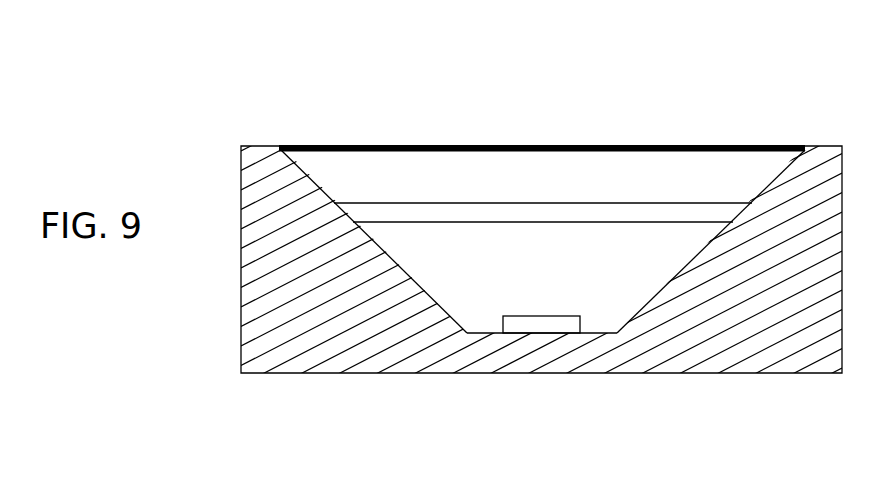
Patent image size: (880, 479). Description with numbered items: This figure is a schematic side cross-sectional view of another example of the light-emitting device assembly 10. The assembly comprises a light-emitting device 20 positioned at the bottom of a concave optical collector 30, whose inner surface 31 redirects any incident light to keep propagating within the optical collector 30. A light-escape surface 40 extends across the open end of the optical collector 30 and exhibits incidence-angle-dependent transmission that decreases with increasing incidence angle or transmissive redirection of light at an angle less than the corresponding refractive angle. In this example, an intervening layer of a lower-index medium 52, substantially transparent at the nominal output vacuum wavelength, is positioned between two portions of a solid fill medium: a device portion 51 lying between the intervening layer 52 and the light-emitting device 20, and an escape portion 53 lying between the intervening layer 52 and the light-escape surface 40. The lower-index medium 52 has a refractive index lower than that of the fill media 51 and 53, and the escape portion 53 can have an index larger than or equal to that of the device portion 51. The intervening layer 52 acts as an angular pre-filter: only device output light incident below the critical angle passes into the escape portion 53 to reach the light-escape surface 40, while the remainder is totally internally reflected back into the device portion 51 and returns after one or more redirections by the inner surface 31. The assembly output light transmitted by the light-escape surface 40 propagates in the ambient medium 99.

The light-emitting device assembly 10 is at (213, 122).
The light-emitting device 20 is at (533, 325).
The optical collector 30 is at (593, 178).
The inner surface 31 is at (390, 258).
The light-escape surface 40 is at (444, 145).
The device portion of solid fill medium 51 is at (497, 283).
The intervening layer of lower-index medium 52 is at (531, 213).
The escape portion of solid fill medium 53 is at (486, 194).
The ambient medium 99 is at (596, 78).